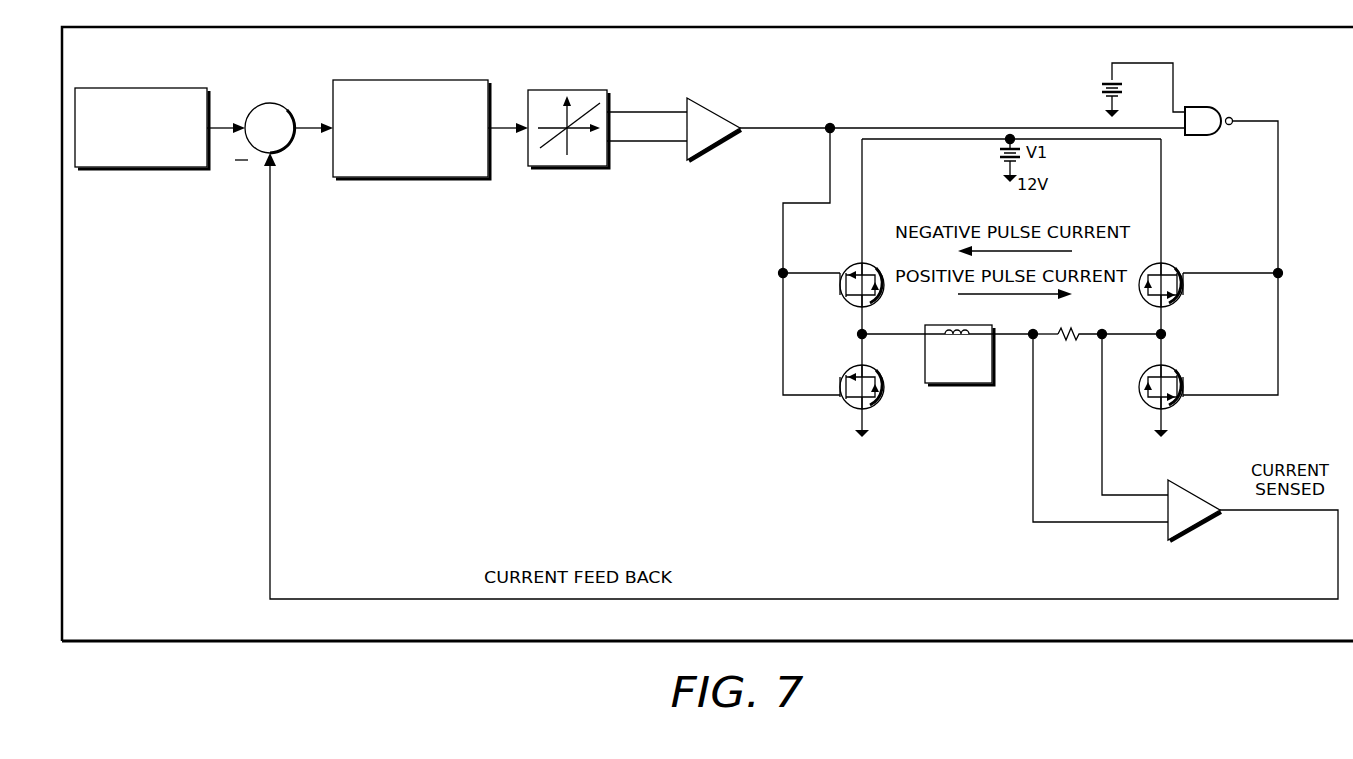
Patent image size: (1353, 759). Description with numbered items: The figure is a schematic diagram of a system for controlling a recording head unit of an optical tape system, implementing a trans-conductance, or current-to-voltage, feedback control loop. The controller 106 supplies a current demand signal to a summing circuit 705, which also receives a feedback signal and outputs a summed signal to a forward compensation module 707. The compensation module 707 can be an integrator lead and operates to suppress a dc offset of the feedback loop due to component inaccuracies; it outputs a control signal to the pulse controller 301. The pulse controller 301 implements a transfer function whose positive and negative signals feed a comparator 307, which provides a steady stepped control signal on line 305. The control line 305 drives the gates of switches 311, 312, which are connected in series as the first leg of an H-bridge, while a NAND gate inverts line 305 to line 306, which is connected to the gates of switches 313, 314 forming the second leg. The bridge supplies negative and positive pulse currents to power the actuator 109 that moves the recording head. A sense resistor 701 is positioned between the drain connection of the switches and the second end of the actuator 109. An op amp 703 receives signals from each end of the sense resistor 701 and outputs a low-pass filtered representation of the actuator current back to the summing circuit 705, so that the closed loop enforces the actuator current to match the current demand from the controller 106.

The controller 106 is at (198, 88).
The summing circuit 705 is at (283, 106).
The forward compensation module 707 is at (468, 80).
The pulse controller 301 is at (596, 90).
The comparator 307 is at (716, 107).
The control line 305 is at (887, 127).
The inverted control line 306 is at (1278, 178).
The switch 311 is at (851, 264).
The switch 312 is at (849, 367).
The switch 313 is at (1171, 265).
The switch 314 is at (1171, 367).
The actuator 109 is at (942, 325).
The sense resistor 701 is at (1072, 331).
The op amp 703 is at (1171, 480).